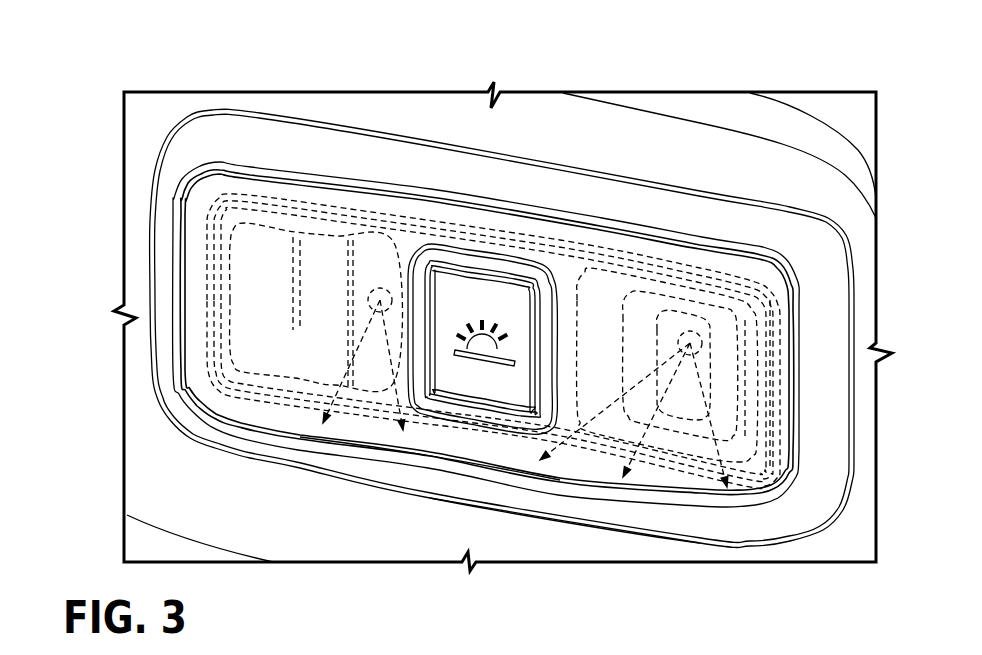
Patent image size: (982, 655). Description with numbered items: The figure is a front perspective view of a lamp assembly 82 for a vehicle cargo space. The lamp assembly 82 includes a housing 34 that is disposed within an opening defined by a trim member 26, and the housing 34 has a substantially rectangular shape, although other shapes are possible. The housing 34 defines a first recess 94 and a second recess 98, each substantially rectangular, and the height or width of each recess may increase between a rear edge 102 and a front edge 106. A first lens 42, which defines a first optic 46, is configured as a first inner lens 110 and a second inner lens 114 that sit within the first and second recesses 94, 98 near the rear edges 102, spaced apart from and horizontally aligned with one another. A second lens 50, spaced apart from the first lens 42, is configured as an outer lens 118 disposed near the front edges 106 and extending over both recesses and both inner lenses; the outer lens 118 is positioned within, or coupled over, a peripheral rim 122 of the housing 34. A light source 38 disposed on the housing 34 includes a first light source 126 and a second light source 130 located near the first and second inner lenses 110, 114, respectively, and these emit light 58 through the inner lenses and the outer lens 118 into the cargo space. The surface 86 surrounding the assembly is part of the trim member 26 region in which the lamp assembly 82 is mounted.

The trim member 26 is at (843, 110).
The body outer surface 86 is at (640, 153).
The lamp assembly 82 is at (757, 197).
The second light source 130 is at (760, 247).
The second inner lens 114 is at (800, 322).
The rear edge 102 is at (300, 352).
The second recess 98 is at (770, 421).
The light 58 is at (237, 328).
The front edge 106 is at (195, 396).
The peripheral rim 122 is at (787, 523).
The housing 34 is at (460, 485).
The outer lens 118 is at (405, 460).
The light source 38 is at (385, 325).
The second lens 50 is at (210, 422).
The first lens 42 is at (245, 255).
The first recess 94 is at (340, 283).
The first inner lens 110 is at (338, 243).
The first light source 126 is at (378, 287).
The first optic 46 is at (402, 278).